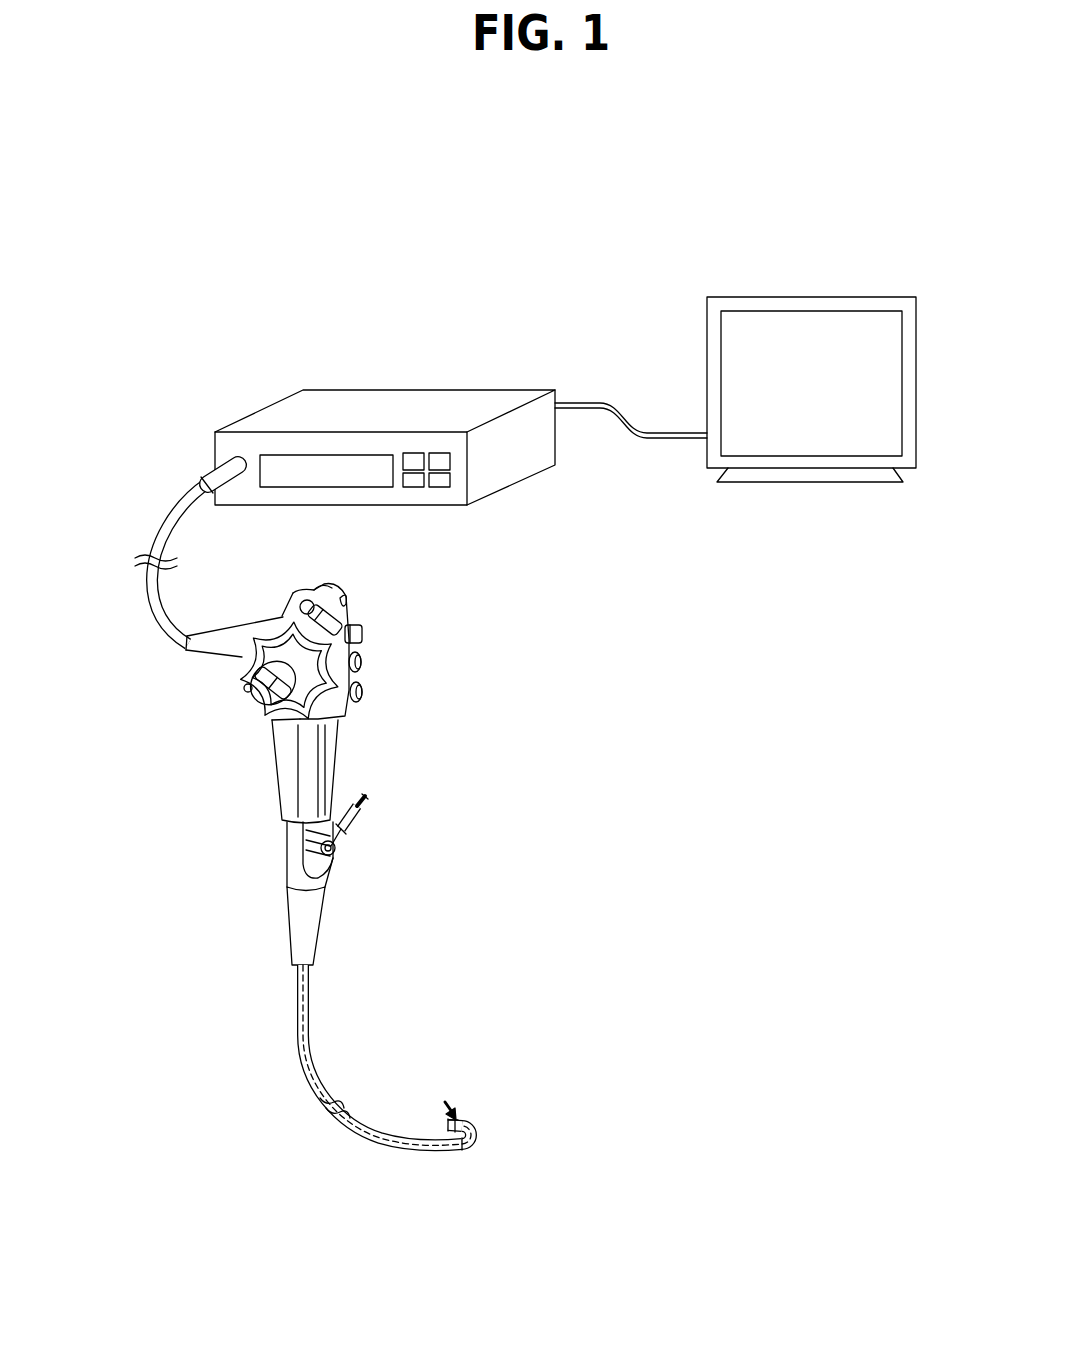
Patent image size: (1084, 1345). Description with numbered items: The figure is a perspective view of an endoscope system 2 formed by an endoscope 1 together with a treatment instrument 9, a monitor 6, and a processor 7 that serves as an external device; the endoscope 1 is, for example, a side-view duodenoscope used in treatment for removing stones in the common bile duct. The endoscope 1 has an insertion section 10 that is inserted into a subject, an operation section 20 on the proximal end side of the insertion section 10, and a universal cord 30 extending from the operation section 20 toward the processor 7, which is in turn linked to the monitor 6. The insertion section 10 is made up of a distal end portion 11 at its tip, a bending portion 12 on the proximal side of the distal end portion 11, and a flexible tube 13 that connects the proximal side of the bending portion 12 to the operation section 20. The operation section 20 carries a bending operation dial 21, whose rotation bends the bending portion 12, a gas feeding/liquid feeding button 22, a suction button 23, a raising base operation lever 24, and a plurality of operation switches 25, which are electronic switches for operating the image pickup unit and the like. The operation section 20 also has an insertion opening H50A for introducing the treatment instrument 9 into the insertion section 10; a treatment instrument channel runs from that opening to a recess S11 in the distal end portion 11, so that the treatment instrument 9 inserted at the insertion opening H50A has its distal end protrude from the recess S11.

The endoscope 1 is at (256, 773).
The endoscope system 2 is at (703, 162).
The monitor 6 is at (818, 297).
The processor 7 is at (350, 390).
The treatment instrument 9 is at (366, 802).
The insertion section 10 is at (307, 1222).
The distal end portion 11 is at (453, 1147).
The bending portion 12 is at (495, 1140).
The flexible tube 13 is at (390, 1142).
The operation section 20 is at (290, 604).
The bending operation dial 21 is at (250, 690).
The gas feeding/liquid feeding button 22 is at (366, 661).
The suction button 23 is at (362, 694).
The raising base operation lever 24 is at (322, 590).
The operation switches 25 is at (362, 636).
The universal cord 30 is at (152, 592).
The insertion opening H50A is at (345, 838).
The recess S11 is at (465, 1106).